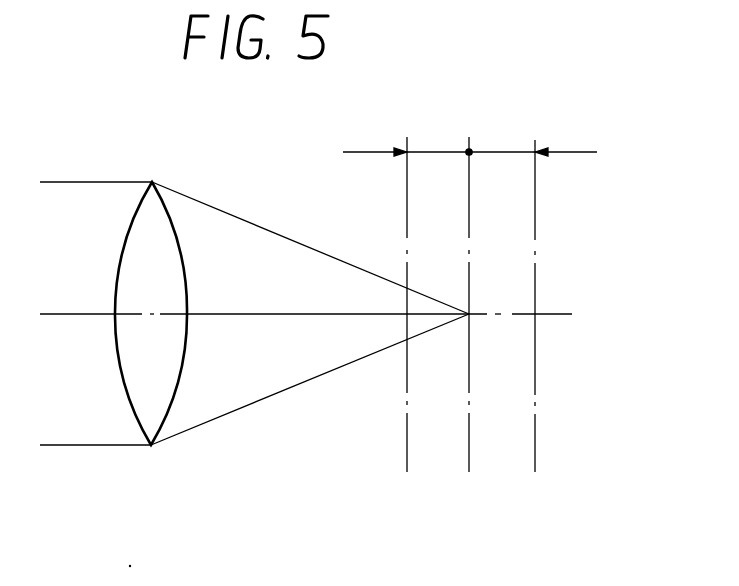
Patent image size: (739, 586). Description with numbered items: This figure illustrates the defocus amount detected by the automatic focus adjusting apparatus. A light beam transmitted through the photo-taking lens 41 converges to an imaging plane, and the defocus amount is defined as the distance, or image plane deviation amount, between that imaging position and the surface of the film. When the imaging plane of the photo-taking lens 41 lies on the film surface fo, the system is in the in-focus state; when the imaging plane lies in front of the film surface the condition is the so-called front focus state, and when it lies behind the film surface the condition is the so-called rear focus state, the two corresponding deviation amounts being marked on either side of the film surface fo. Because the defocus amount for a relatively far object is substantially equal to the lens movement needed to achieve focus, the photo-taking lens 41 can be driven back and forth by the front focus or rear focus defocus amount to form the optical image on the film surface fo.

The photo-taking lens 41 is at (127, 232).
The film surface fo is at (472, 288).